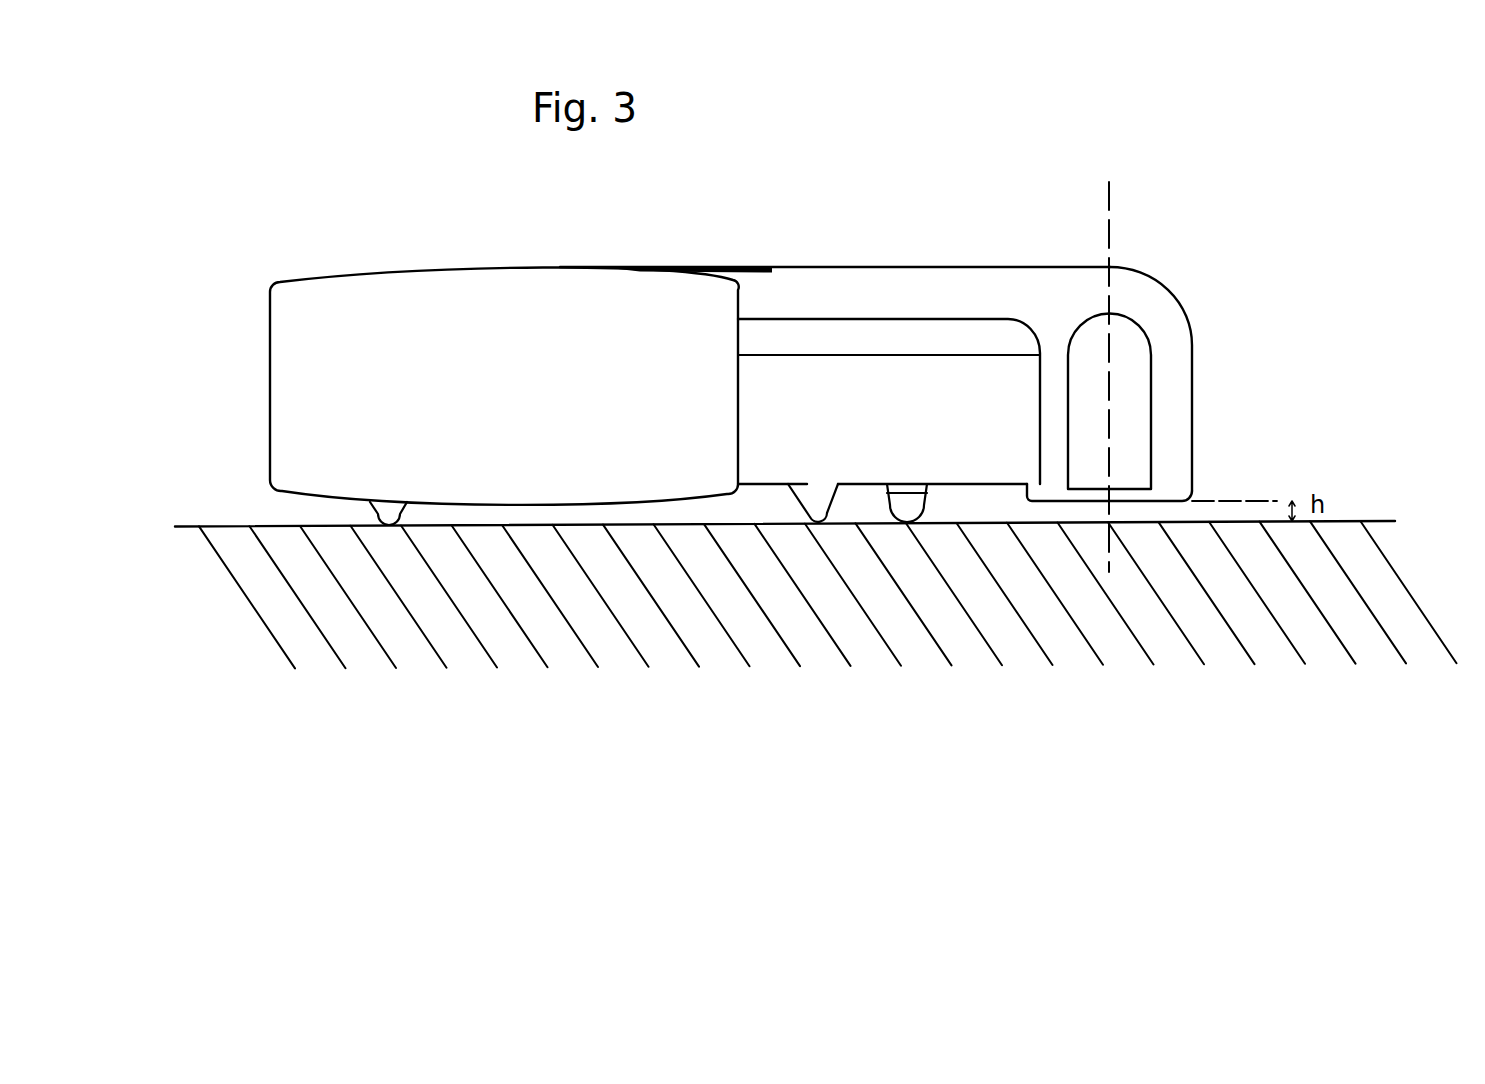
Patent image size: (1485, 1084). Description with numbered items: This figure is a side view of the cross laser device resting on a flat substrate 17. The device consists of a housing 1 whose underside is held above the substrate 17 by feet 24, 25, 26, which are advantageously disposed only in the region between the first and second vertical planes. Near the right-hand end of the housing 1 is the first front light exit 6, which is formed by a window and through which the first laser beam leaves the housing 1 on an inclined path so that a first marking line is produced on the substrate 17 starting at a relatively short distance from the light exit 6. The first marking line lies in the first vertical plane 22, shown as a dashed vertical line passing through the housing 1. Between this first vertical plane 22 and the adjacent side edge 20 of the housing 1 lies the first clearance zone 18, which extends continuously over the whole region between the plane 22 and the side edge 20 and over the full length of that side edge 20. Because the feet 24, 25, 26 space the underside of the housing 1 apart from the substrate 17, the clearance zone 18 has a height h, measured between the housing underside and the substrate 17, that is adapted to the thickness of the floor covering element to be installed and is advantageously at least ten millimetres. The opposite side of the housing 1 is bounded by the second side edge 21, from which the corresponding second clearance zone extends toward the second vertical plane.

The housing 1 is at (867, 277).
The first front light exit 6 is at (1123, 331).
The substrate 17 is at (225, 526).
The first clearance zone 18 is at (1148, 512).
The side edge 20 is at (1193, 372).
The second side edge 21 is at (330, 430).
The first vertical plane 22 is at (1113, 227).
The foot 24 is at (907, 512).
The foot 25 is at (390, 515).
The foot 26 is at (805, 500).